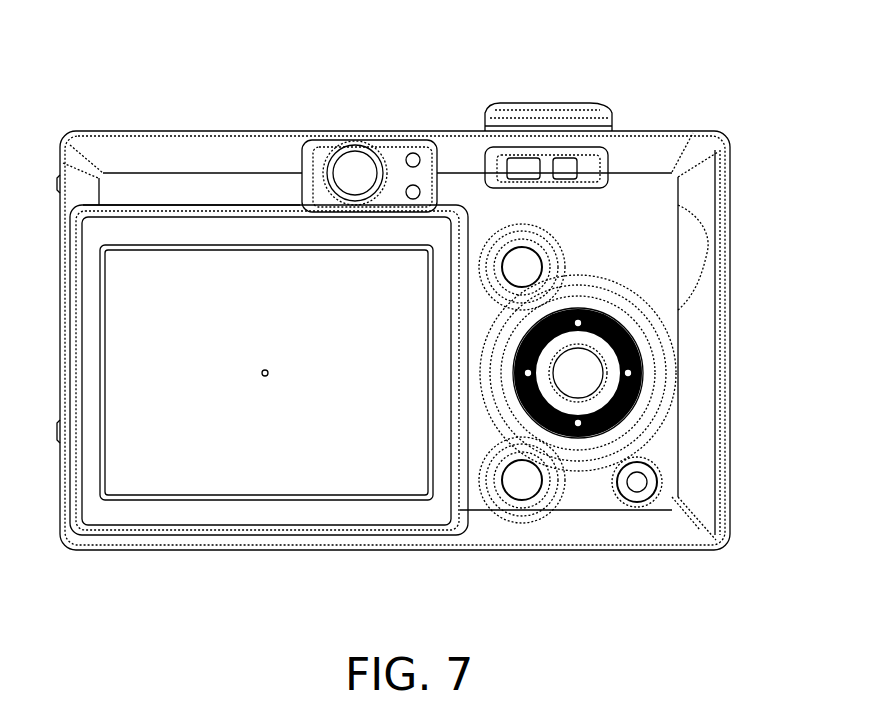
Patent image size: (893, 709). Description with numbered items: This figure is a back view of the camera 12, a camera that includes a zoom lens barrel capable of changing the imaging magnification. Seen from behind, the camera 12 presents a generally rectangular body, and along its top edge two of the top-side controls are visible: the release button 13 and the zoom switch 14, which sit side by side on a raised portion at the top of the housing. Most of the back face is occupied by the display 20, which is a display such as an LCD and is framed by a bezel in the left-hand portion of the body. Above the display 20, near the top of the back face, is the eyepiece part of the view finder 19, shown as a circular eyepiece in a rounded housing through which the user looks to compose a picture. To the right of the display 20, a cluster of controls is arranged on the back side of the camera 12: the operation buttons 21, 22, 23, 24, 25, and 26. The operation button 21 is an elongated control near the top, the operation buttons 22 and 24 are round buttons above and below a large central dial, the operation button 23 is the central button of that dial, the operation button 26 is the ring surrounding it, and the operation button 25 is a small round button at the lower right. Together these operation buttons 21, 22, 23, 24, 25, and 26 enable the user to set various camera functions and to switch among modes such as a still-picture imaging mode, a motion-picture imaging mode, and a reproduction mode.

The camera 12 is at (183, 153).
The release button 13 is at (542, 103).
The zoom switch 14 is at (567, 128).
The eyepiece part of the view finder 19 is at (347, 175).
The display 20 is at (198, 468).
The operation button 21 is at (573, 175).
The operation button 22 is at (525, 265).
The operation button 23 is at (578, 378).
The operation button 24 is at (520, 485).
The operation button 25 is at (637, 485).
The operation button 26 is at (642, 388).